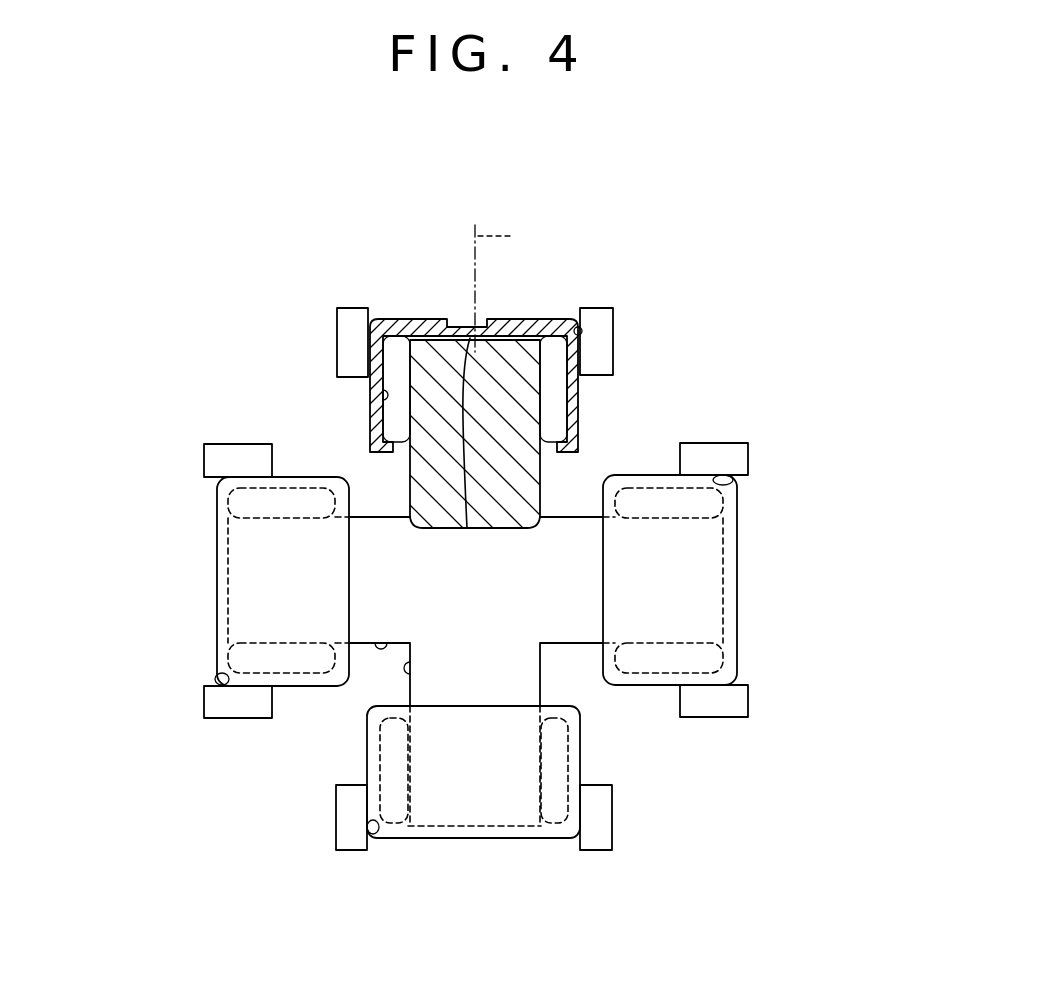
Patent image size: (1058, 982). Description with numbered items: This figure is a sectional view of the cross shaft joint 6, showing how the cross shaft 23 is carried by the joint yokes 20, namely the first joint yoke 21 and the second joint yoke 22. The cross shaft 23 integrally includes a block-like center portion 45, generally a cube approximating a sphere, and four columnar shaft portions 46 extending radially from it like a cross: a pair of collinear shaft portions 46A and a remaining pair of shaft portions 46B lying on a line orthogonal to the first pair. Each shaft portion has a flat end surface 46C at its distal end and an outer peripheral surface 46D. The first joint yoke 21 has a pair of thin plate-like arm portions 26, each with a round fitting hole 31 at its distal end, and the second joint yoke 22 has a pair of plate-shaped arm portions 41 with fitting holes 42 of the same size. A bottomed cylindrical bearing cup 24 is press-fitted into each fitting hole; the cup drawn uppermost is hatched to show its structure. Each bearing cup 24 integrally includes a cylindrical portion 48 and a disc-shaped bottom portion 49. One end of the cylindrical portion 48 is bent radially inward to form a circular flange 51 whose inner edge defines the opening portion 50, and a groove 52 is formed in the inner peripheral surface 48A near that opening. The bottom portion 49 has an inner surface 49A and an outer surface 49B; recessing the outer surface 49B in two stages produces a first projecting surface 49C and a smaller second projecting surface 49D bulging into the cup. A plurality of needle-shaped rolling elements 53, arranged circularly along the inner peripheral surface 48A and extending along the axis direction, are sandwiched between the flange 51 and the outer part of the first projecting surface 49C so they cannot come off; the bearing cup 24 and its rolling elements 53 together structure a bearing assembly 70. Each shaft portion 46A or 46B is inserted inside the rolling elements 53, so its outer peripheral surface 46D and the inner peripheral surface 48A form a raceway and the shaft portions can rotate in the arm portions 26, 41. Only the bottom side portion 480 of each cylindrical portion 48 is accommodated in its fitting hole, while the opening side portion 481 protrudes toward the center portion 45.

The cross shaft joint 6 is at (350, 710).
The yoke 20 is at (596, 579).
The first joint yoke 21 is at (596, 579).
The second joint yoke 22 is at (714, 580).
The cross shaft 23 is at (543, 666).
The bearing cup 24 is at (436, 317).
The arm portion 26 is at (613, 348).
The fitting hole 31 is at (582, 324).
The arm portion 41 is at (703, 448).
The fitting hole 42 is at (217, 677).
The center portion 45 is at (477, 582).
The shaft portion 46 is at (475, 435).
The shaft portion 46A is at (515, 497).
The shaft portion 46B is at (367, 556).
The end surface 46C is at (532, 336).
The outer peripheral surface 46D is at (542, 407).
The cylindrical portion 48 is at (372, 397).
The inner peripheral surface 48A is at (372, 413).
The bottom portion 49 is at (505, 322).
The inner surface 49A is at (390, 363).
The outer surface 49B is at (420, 319).
The first projecting surface 49C is at (397, 345).
The second projecting surface 49D is at (467, 528).
The opening portion 50 is at (420, 522).
The flange 51 is at (550, 448).
The groove 52 is at (577, 435).
The rolling element 53 is at (397, 338).
The bearing assembly 70 is at (568, 316).
The bottom side portion 480 is at (373, 338).
The opening side portion 481 is at (372, 433).